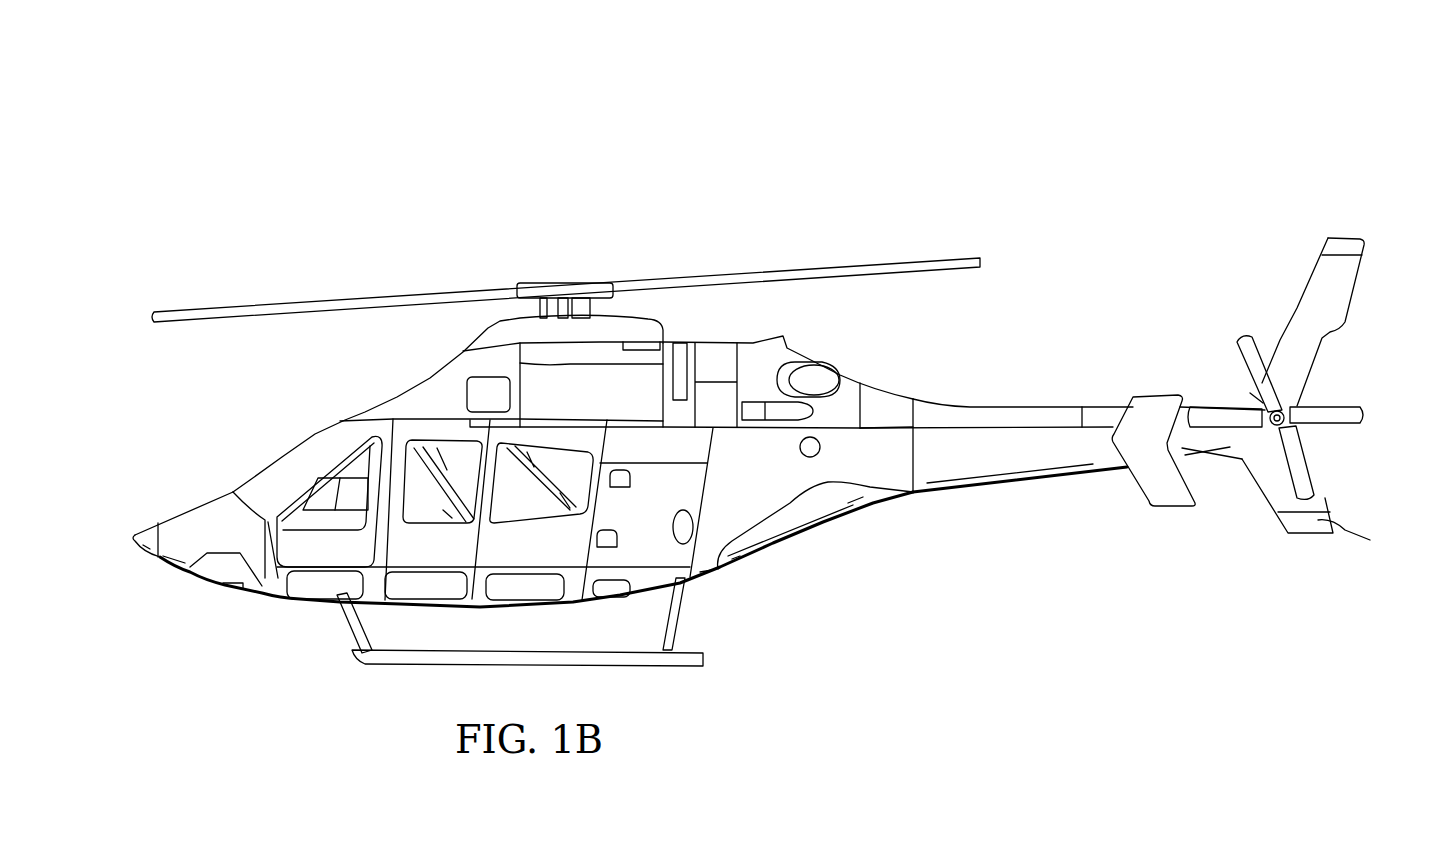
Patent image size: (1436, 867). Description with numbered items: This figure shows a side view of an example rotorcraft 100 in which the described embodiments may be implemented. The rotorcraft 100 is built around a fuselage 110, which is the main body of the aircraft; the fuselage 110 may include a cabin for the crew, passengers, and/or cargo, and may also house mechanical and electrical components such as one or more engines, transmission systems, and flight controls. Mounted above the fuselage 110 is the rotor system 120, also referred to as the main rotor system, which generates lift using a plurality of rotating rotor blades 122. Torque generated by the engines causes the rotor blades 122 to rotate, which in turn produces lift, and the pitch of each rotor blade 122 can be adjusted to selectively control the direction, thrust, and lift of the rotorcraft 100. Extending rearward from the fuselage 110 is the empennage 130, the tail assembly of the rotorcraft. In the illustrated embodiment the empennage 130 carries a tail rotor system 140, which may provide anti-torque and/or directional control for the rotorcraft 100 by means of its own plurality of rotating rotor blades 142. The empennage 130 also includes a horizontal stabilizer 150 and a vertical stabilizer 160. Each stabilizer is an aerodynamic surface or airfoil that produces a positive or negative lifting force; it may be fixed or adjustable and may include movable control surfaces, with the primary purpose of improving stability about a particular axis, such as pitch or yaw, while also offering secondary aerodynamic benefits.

The rotorcraft 100 is at (284, 151).
The fuselage 110 is at (708, 582).
The rotor system 120 is at (571, 271).
The rotor blades 122 is at (878, 257).
The empennage 130 is at (1077, 489).
The tail rotor system 140 is at (1284, 404).
The rotor blades 142 is at (1298, 469).
The horizontal stabilizer 150 is at (1162, 395).
The vertical stabilizer 160 is at (1360, 278).